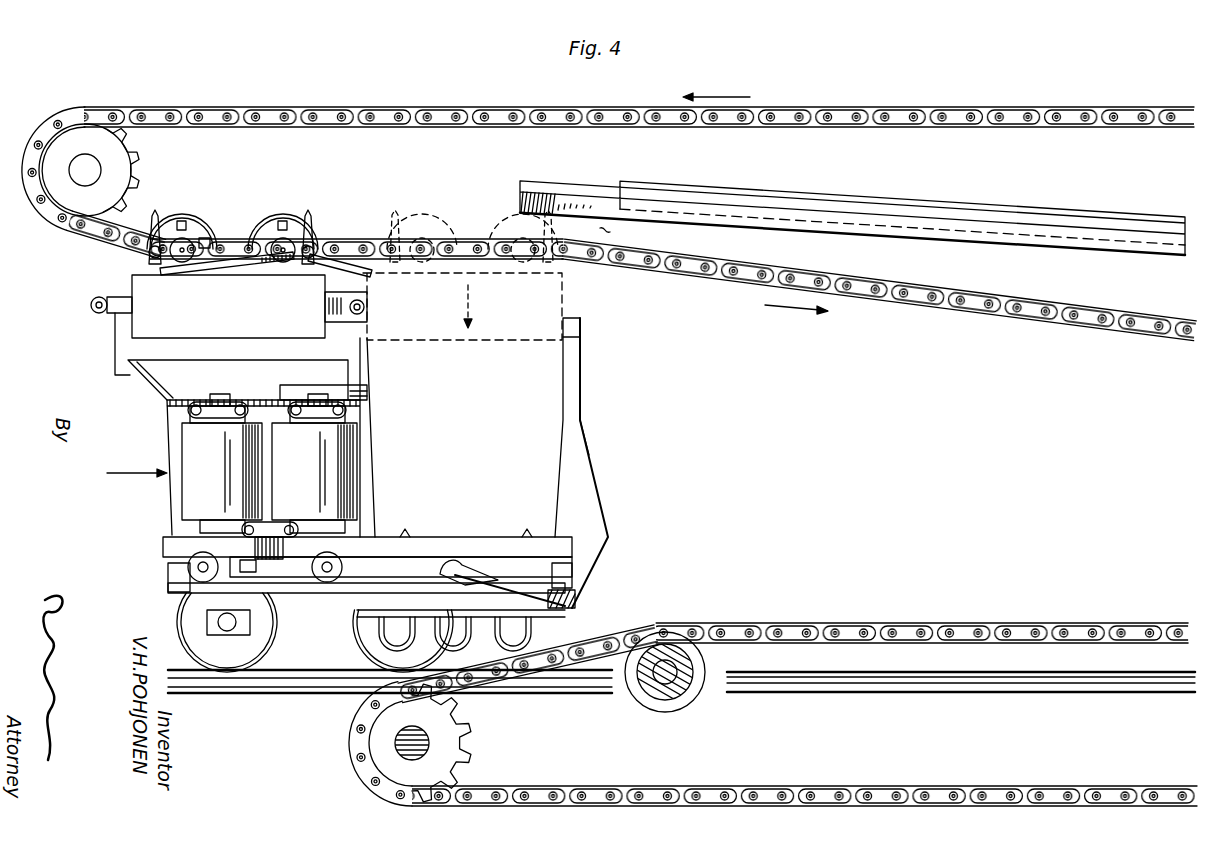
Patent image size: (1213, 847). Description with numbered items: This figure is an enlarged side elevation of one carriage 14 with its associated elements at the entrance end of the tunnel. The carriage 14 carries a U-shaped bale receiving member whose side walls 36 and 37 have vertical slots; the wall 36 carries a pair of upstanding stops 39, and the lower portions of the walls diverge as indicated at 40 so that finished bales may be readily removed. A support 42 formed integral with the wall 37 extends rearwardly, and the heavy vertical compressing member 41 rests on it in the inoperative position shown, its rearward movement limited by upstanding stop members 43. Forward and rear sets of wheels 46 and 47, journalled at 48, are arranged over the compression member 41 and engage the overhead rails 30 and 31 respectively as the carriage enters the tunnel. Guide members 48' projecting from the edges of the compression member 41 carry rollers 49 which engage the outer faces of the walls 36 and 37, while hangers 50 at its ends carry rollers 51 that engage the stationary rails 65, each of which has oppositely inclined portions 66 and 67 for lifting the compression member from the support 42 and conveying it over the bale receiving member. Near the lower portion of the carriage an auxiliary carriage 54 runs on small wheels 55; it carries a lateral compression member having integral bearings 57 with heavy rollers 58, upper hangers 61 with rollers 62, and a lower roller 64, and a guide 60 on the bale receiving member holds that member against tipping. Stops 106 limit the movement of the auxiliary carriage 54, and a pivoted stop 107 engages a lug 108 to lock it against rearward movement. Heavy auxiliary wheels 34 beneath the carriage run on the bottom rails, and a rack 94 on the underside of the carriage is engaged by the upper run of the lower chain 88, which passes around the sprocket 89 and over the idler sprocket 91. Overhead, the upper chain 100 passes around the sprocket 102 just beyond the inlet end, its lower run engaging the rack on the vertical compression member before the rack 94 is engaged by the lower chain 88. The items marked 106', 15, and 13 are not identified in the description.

The upper chain 100 is at (874, 108).
The sprocket 102 is at (133, 171).
The overhead rails 30 is at (662, 182).
The overhead rails 31 is at (615, 231).
The forward wheels 46 is at (283, 213).
The rear wheels 47 is at (215, 226).
The journal 48 is at (223, 230).
The guide members 48' is at (306, 306).
The rollers 49 is at (91, 309).
The hangers 50 is at (157, 215).
The rollers 51 is at (150, 252).
The vertical compressing member 41 is at (132, 288).
The stop members 43 is at (115, 333).
The support 42 is at (264, 352).
The side wall 37 is at (353, 373).
The guide 60 is at (366, 402).
The upper hangers 61 is at (224, 398).
The rollers 62 is at (300, 415).
The bearings 57 is at (223, 421).
The heavy rollers 58 is at (269, 471).
The small wheels 55 is at (210, 559).
The roller 64 is at (285, 553).
The auxiliary carriage 54 is at (357, 543).
The stops 106 is at (575, 550).
The stop bracket 106' is at (148, 572).
The pivoted stop 107 is at (447, 578).
The lug 108 is at (248, 571).
The upstanding stops 39 is at (580, 331).
The side wall 36 is at (583, 395).
The diverging lower portions 40 is at (563, 462).
The carriage 14 is at (603, 479).
The wheel 15 is at (268, 633).
The auxiliary wheels 34 is at (500, 648).
The rack 94 is at (573, 616).
The lower chain 88 is at (818, 623).
The rail 13 is at (880, 670).
The idler sprocket 91 is at (700, 689).
The sprocket 89 is at (453, 752).
The stationary rails 65 is at (275, 274).
The inclined portion 66 is at (228, 274).
The inclined portion 67 is at (507, 273).